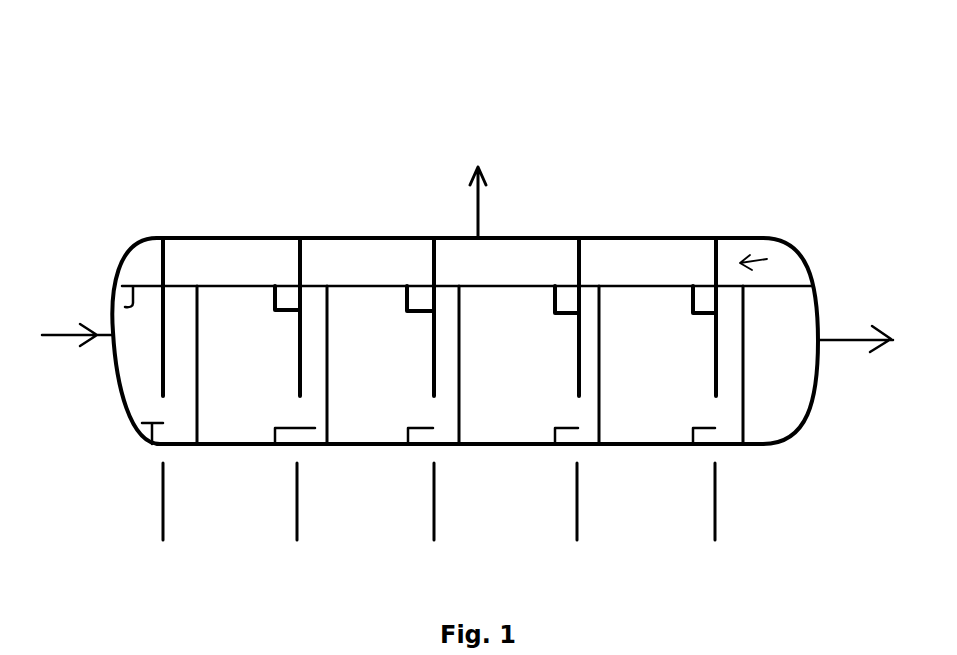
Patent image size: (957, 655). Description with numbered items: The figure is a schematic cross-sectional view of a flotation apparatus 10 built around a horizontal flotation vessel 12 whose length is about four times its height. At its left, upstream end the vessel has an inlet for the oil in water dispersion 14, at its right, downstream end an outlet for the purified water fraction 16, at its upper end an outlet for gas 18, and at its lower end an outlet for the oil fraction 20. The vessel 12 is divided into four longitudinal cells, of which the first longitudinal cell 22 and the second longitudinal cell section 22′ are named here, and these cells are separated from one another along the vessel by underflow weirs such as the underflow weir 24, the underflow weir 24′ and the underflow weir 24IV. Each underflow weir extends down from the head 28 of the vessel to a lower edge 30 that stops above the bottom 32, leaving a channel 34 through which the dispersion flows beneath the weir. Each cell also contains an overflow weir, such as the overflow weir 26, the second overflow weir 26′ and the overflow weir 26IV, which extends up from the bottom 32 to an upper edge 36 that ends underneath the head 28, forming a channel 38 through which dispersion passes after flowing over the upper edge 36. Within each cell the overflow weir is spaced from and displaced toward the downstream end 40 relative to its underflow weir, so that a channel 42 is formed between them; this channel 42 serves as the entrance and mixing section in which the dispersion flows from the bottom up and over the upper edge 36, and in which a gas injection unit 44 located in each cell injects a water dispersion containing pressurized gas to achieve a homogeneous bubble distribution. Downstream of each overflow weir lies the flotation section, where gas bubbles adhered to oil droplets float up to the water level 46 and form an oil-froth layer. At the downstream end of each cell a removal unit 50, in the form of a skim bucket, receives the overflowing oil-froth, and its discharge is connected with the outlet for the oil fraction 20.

The flotation apparatus 10 is at (510, 84).
The flotation vessel 12 is at (123, 263).
The inlet for the oil in water dispersion 14 is at (88, 340).
The outlet for the purified water fraction 16 is at (853, 350).
The outlet for gas 18 is at (482, 192).
The outlet for the oil fraction 20 is at (753, 447).
The longitudinal cell 22 is at (230, 501).
The second longitudinal cell section 22′ is at (396, 501).
The underflow weir 24 is at (158, 260).
The underflow weir 24′ is at (300, 245).
The underflow weir 24IV is at (716, 238).
The overflow weir 26 is at (197, 300).
The second overflow weir 26′ is at (327, 300).
The overflow weir 26IV is at (743, 398).
The head 28 is at (240, 238).
The lower edge 30 is at (163, 395).
The bottom 32 is at (220, 443).
The channel 34 is at (303, 425).
The upper edge 36 is at (745, 290).
The channel 38 is at (803, 243).
The downstream end 40 is at (820, 360).
The channel 42 is at (443, 363).
The gas injection unit 44 is at (148, 440).
The water level 46 is at (125, 307).
The removal unit 50 is at (553, 300).